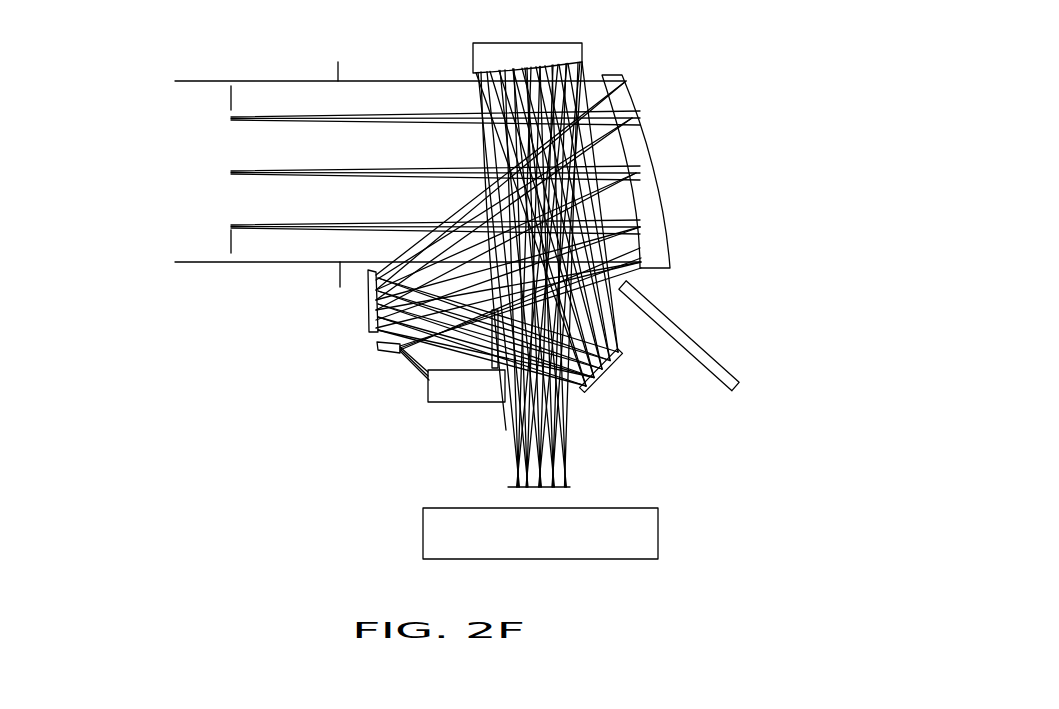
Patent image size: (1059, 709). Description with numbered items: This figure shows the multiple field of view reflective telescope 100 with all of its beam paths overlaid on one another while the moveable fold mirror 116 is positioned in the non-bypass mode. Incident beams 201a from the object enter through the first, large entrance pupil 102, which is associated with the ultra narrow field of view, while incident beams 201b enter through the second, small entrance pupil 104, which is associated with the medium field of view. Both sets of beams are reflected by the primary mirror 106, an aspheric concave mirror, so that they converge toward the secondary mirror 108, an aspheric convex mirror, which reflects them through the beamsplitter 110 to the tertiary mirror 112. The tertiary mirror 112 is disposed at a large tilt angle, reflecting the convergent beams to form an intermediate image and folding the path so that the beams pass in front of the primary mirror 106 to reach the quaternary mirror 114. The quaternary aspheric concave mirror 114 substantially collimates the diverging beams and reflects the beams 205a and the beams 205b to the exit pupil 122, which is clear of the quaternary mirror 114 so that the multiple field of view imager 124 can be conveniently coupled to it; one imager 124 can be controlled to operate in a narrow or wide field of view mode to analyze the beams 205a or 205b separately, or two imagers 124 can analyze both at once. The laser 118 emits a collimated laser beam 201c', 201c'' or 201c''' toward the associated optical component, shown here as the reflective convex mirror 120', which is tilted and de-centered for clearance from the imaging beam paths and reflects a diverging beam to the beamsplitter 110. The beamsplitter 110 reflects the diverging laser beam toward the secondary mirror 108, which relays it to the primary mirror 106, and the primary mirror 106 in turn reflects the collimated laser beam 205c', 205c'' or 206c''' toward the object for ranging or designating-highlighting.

The multiple field of view reflective telescope 100 is at (721, 69).
The first (large) entrance pupil 102 is at (339, 282).
The second (small) entrance pupil 104 is at (229, 242).
The primary mirror 106 is at (650, 128).
The secondary mirror 108 is at (369, 323).
The beamsplitter 110 is at (480, 255).
The tertiary mirror 112 is at (586, 393).
The quaternary mirror 114 is at (530, 43).
The moveable fold mirror 116 is at (690, 340).
The laser 118 is at (441, 403).
The reflective convex mirror 120' is at (366, 365).
The exit pupil 122 is at (570, 486).
The multiple field of view imager 124 is at (659, 527).
The incident beams 201a is at (357, 82).
The incident beams 201b is at (246, 119).
The laser beam 201c' is at (417, 341).
The laser beam 201c'' is at (520, 317).
The laser beam 201c''' is at (520, 314).
The beams 205a is at (516, 434).
The beams 205b is at (522, 477).
The collimated laser beam 205c' is at (341, 169).
The collimated laser beam 205c'' is at (508, 246).
The collimated laser beam 206c''' is at (348, 295).